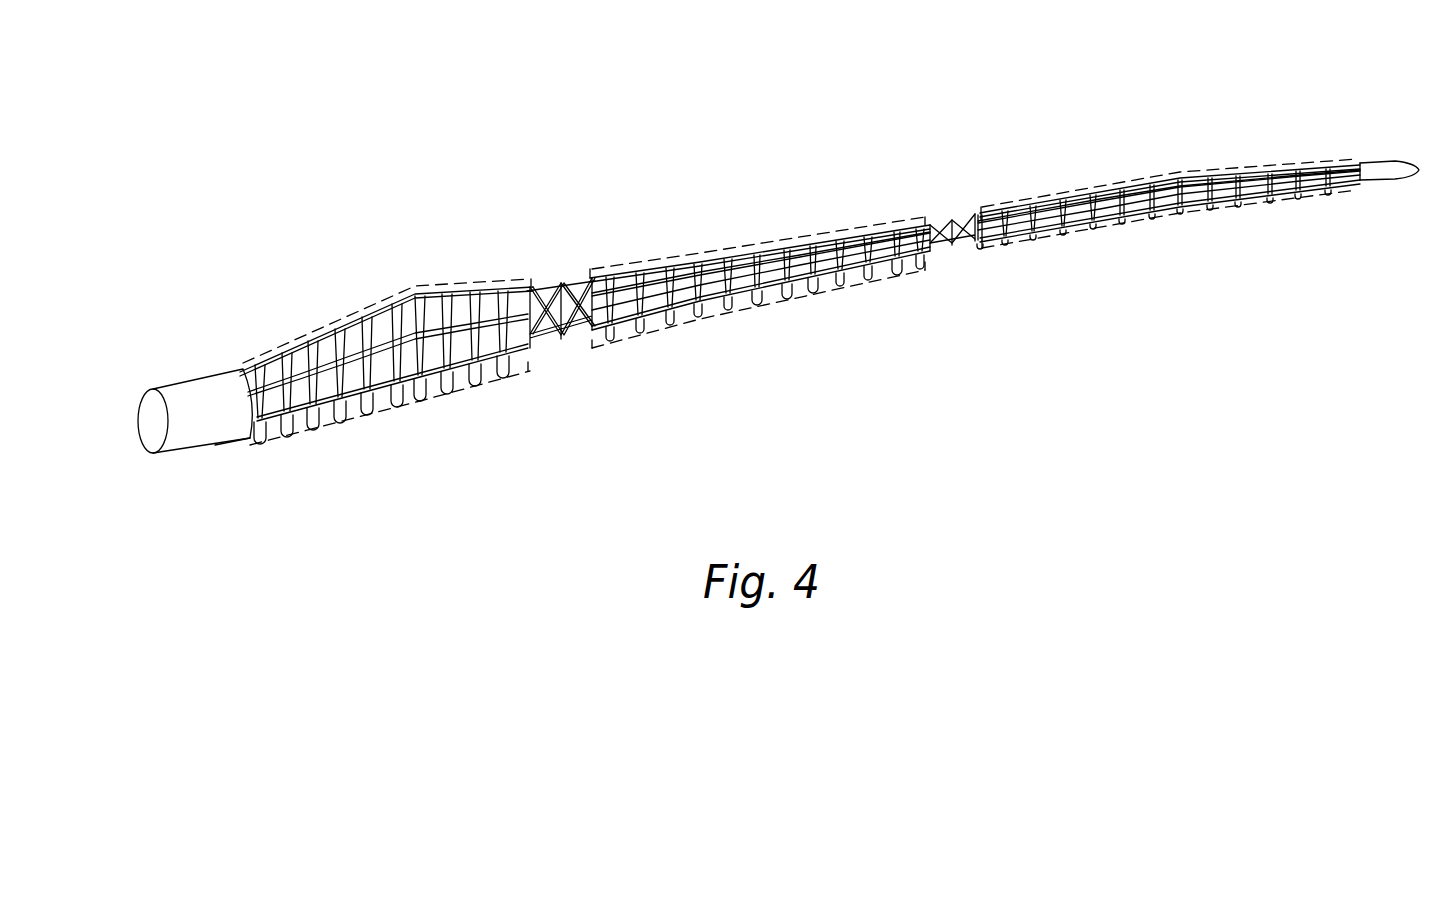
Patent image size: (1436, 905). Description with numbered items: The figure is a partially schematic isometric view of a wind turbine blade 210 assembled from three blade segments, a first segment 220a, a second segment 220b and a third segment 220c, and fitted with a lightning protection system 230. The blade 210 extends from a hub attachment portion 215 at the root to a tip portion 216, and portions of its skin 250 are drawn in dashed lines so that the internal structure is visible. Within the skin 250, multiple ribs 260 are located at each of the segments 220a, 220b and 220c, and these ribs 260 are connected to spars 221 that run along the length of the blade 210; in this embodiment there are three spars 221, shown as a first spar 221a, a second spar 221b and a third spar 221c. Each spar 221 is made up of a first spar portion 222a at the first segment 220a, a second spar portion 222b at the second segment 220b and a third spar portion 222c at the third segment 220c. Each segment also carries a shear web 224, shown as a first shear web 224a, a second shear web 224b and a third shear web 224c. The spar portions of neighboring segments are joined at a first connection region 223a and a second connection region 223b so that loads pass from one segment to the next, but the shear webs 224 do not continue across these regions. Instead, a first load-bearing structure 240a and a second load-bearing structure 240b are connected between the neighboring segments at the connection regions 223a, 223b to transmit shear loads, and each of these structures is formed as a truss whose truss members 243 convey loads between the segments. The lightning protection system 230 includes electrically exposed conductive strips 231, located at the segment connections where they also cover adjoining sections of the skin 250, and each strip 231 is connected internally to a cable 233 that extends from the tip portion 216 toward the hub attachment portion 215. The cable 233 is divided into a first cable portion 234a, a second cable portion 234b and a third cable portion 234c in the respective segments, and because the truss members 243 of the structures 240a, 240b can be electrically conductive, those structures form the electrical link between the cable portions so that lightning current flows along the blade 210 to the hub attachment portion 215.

The blade 210 is at (728, 112).
The hub attachment portion 215 is at (228, 437).
The tip portion 216 is at (1363, 150).
The first segment 220a is at (370, 435).
The second segment 220b is at (757, 318).
The third segment 220c is at (1168, 230).
The spar 221 is at (248, 319).
The first spar 221a is at (452, 388).
The second spar 221b is at (367, 298).
The third spar 221c is at (353, 317).
The first spar portion 222a is at (290, 432).
The second spar portion 222b is at (657, 312).
The third spar portion 222c is at (1020, 230).
The first connection region 223a is at (557, 276).
The second connection region 223b is at (933, 207).
The shear web 224 is at (465, 226).
The first shear web 224a is at (428, 298).
The second shear web 224b is at (620, 280).
The third shear web 224c is at (1105, 203).
The lightning protection system 230 is at (1015, 97).
The strip 231 is at (1398, 167).
The cable 233 is at (133, 430).
The first cable portion 234a is at (400, 300).
The second cable portion 234b is at (860, 240).
The third cable portion 234c is at (1087, 195).
The first load-bearing structure 240a is at (560, 378).
The second load-bearing structure 240b is at (953, 276).
The truss member 243 is at (583, 328).
The skin 250 is at (598, 265).
The rib 260 is at (256, 362).